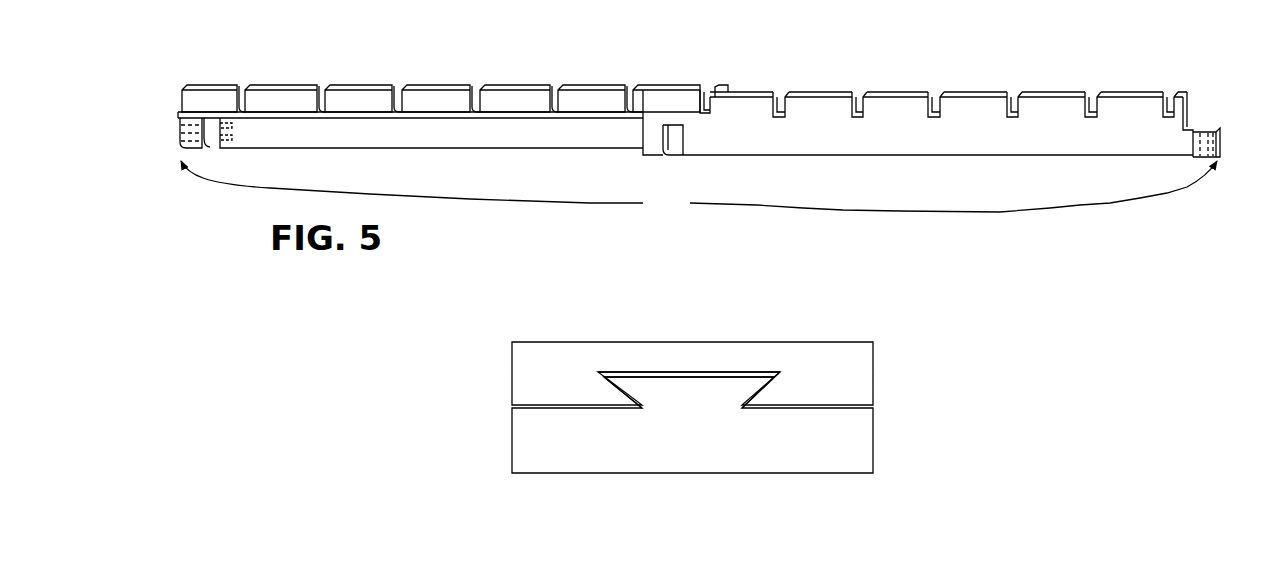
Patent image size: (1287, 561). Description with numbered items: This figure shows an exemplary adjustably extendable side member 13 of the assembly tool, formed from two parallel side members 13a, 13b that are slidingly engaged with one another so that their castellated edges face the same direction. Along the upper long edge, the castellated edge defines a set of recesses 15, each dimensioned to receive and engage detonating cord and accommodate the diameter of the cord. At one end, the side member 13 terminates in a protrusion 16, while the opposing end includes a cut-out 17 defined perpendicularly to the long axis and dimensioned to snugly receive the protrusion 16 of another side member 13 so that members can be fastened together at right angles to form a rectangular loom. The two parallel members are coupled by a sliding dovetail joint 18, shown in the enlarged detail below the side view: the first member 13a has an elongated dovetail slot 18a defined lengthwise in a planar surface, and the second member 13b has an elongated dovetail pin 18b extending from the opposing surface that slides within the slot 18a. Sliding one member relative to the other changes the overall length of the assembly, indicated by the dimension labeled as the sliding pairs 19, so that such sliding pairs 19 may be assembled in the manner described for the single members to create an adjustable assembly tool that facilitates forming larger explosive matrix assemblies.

The side member 13 is at (431, 103).
The first parallel side member 13a is at (556, 353).
The second parallel side member 13b is at (860, 434).
The recesses 15 is at (395, 84).
The protrusion 16 is at (1218, 128).
The cut-out 17 is at (208, 142).
The sliding dovetail joint 18 is at (501, 125).
The dovetail slot 18a is at (700, 370).
The dovetail pin 18b is at (668, 393).
The sliding pairs 19 is at (699, 190).